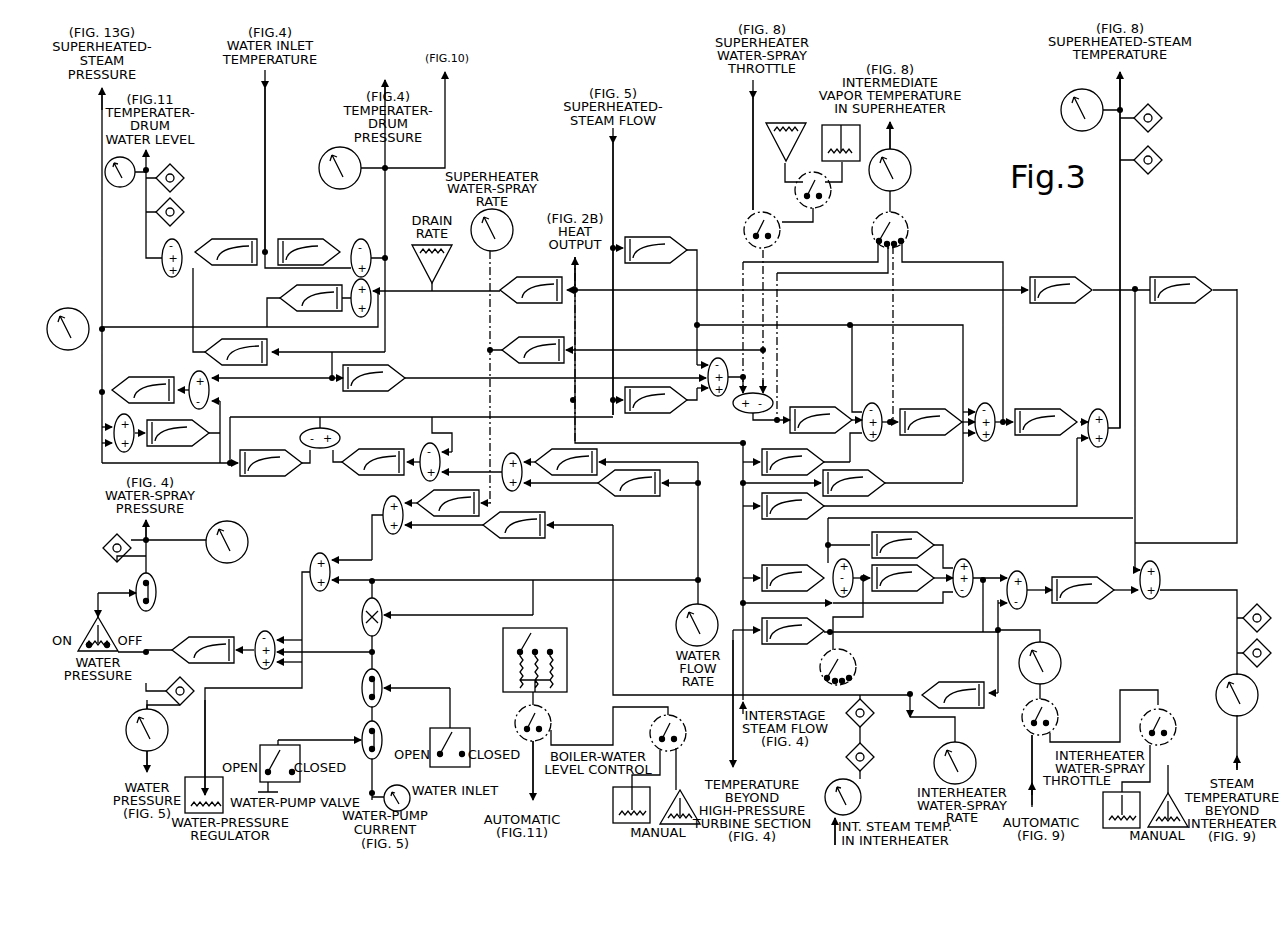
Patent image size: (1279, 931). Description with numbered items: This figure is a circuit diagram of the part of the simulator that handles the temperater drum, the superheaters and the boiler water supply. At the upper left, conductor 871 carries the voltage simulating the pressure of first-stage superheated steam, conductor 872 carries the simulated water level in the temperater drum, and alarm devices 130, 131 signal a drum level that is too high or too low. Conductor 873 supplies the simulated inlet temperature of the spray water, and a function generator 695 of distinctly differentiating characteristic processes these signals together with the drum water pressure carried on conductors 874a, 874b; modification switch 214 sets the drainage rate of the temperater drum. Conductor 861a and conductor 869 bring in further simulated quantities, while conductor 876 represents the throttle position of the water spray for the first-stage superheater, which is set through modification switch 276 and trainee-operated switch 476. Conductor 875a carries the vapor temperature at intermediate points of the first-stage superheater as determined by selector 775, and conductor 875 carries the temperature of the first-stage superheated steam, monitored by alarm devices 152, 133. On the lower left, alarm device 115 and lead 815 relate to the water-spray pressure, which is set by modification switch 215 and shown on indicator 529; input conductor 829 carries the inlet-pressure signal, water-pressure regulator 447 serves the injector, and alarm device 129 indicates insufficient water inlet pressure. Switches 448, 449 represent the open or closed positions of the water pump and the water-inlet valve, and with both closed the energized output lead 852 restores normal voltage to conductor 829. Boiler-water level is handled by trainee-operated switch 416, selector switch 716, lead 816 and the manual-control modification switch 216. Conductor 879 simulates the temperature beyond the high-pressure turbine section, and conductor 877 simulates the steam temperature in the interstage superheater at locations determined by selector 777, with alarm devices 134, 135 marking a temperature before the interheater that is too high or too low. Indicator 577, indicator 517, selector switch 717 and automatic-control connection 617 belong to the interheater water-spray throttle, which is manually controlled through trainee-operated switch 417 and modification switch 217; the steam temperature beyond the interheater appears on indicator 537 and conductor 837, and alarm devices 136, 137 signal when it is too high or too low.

The conductor 871 is at (102, 178).
The conductor 872 is at (150, 162).
The alarm device 130 is at (184, 178).
The alarm device 131 is at (184, 212).
The conductor 873 is at (267, 118).
The function generator 695 is at (232, 266).
The conductor 874a is at (385, 185).
The conductor 874b is at (465, 98).
The modification switch 214 is at (435, 280).
The superheated-steam flow input 861a is at (615, 165).
The heat output signal 869 is at (577, 262).
The conductor 876 is at (751, 108).
The manual setter 276 is at (787, 125).
The automatic/manual switch 476 is at (853, 165).
The conductor 875a is at (893, 132).
The selector 775 is at (910, 218).
The conductor 875 is at (1122, 88).
The signal limiter 152 is at (1162, 118).
The alarm device 133 is at (1162, 160).
The signal limiter 115 is at (106, 545).
The water-spray pressure output 815 is at (150, 538).
The modification switch 215 is at (92, 618).
The water pressure gauge 529 is at (125, 713).
The input conductor 829 is at (140, 760).
The water-pressure regulator 447 is at (185, 778).
The alarm device 129 is at (193, 692).
The water-pump switch 448 is at (258, 742).
The water-inlet valve switch 449 is at (443, 730).
The output lead 852 is at (372, 777).
The trainee-operated switch 416 is at (502, 645).
The selector switch 716 is at (553, 727).
The lead 816 is at (535, 785).
The modification switch 216 is at (682, 788).
The conductor 879 is at (738, 765).
The conductor 877 is at (830, 840).
The selector 777 is at (820, 669).
The alarm device 134 is at (862, 700).
The alarm device 135 is at (874, 757).
The steam temperature gauge 577 is at (861, 797).
The interheater water-spray throttle gauge 517 is at (1061, 658).
The interheater water-spray throttle switch 717 is at (1058, 710).
The automatic output 617 is at (1030, 761).
The manual setter 417 is at (1102, 797).
The modification switch 217 is at (1175, 800).
The steam temperature beyond interheater gauge 537 is at (1216, 694).
The steam temperature output 837 is at (1232, 757).
The alarm device 136 is at (1257, 604).
The alarm device 137 is at (1243, 655).